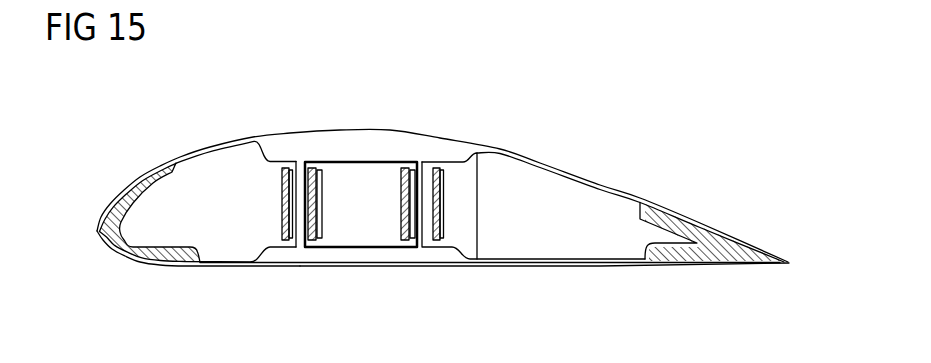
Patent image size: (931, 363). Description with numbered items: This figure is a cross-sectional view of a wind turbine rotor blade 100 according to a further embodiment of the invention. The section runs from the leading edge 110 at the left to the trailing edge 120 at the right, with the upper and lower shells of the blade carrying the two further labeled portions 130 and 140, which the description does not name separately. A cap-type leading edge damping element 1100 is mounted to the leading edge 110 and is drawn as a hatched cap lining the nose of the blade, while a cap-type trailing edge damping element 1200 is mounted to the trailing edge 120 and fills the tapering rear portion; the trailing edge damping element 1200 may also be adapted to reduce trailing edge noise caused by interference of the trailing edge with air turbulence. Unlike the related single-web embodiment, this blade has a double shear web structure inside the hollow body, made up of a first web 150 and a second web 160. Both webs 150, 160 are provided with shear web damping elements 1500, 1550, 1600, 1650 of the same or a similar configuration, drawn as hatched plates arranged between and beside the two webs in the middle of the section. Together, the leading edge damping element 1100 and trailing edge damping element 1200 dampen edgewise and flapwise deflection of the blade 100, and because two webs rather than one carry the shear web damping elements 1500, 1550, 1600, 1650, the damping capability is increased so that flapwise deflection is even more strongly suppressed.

The blade 100 is at (648, 120).
The leading edge 110 is at (87, 269).
The trailing edge 120 is at (773, 286).
The upper (suction) surface 130 is at (545, 164).
The lower (pressure) surface 140 is at (555, 264).
The first web 150 is at (300, 160).
The second web 160 is at (422, 162).
The leading edge damping element 1100 is at (96, 186).
The trailing edge damping element 1200 is at (763, 224).
The shear web damping element 1500 is at (262, 202).
The shear web damping element 1550 is at (338, 181).
The shear web damping element 1600 is at (466, 202).
The shear web damping element 1650 is at (387, 225).